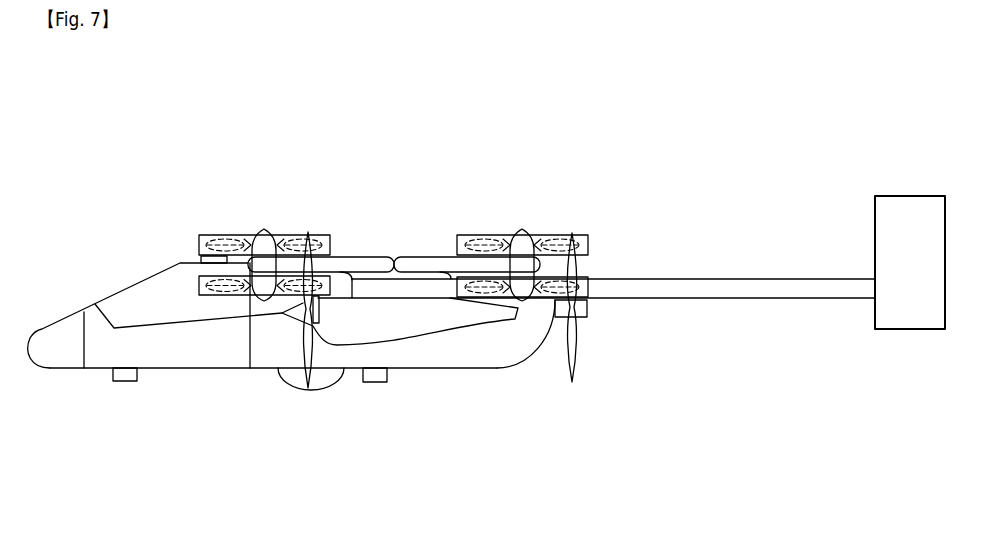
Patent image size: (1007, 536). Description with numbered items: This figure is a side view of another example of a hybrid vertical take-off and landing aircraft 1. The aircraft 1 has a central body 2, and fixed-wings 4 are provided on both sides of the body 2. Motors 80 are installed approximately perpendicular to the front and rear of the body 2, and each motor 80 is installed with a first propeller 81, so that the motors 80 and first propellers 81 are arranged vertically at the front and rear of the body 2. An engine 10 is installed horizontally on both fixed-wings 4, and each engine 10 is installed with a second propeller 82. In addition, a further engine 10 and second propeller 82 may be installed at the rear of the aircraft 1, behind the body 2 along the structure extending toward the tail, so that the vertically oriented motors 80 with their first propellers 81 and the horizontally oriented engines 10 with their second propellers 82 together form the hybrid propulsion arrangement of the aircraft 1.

The aircraft 1 is at (140, 138).
The body 2 is at (183, 353).
The fixed-wings 4 is at (422, 290).
The engine 10 is at (358, 322).
The motor 80 is at (270, 262).
The first propeller 81 is at (218, 246).
The second propeller 82 is at (311, 386).